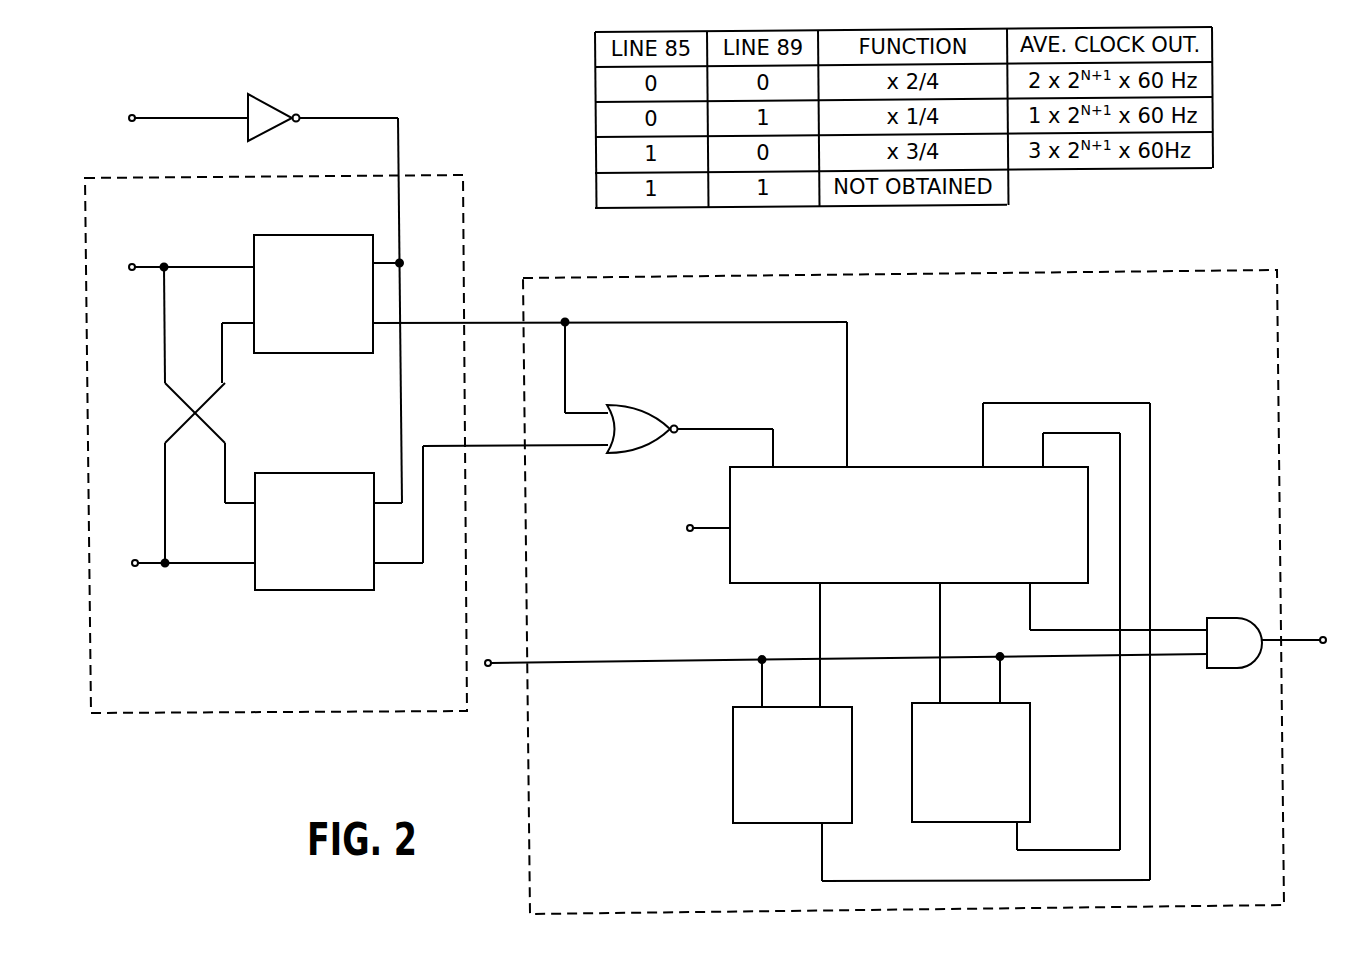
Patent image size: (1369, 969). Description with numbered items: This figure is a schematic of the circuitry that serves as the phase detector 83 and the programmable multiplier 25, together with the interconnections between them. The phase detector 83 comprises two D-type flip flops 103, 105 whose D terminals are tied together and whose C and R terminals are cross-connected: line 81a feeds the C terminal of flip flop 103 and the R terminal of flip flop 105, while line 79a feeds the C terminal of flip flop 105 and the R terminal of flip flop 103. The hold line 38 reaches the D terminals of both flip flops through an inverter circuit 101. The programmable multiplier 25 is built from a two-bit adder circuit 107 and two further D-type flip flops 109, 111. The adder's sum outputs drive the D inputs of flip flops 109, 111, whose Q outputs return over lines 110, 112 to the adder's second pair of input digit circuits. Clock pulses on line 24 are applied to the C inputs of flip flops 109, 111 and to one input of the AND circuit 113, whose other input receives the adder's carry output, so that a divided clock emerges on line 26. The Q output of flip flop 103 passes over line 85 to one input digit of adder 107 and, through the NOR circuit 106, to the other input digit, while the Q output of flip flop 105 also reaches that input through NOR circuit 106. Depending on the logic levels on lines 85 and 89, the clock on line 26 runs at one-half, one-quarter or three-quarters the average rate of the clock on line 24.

The line 24 is at (602, 662).
The programmable multiplier 25 is at (547, 278).
The line 26 is at (1316, 647).
The hold line 38 is at (222, 118).
The line 79a is at (149, 566).
The line 81a is at (147, 263).
The phase detector 83 is at (428, 176).
The line 85 is at (448, 322).
The line 89 is at (451, 445).
The inverter circuit 101 is at (264, 100).
The D-type flip flop 103 is at (304, 235).
The D-type flip flop 105 is at (304, 473).
The NOR circuit 106 is at (640, 405).
The two-bit adder circuit 107 is at (906, 467).
The D-type flip flop 109 is at (838, 707).
The line 110 is at (824, 851).
The D-type flip flop 111 is at (1012, 703).
The line 112 is at (1031, 850).
The AND circuit 113 is at (1236, 618).